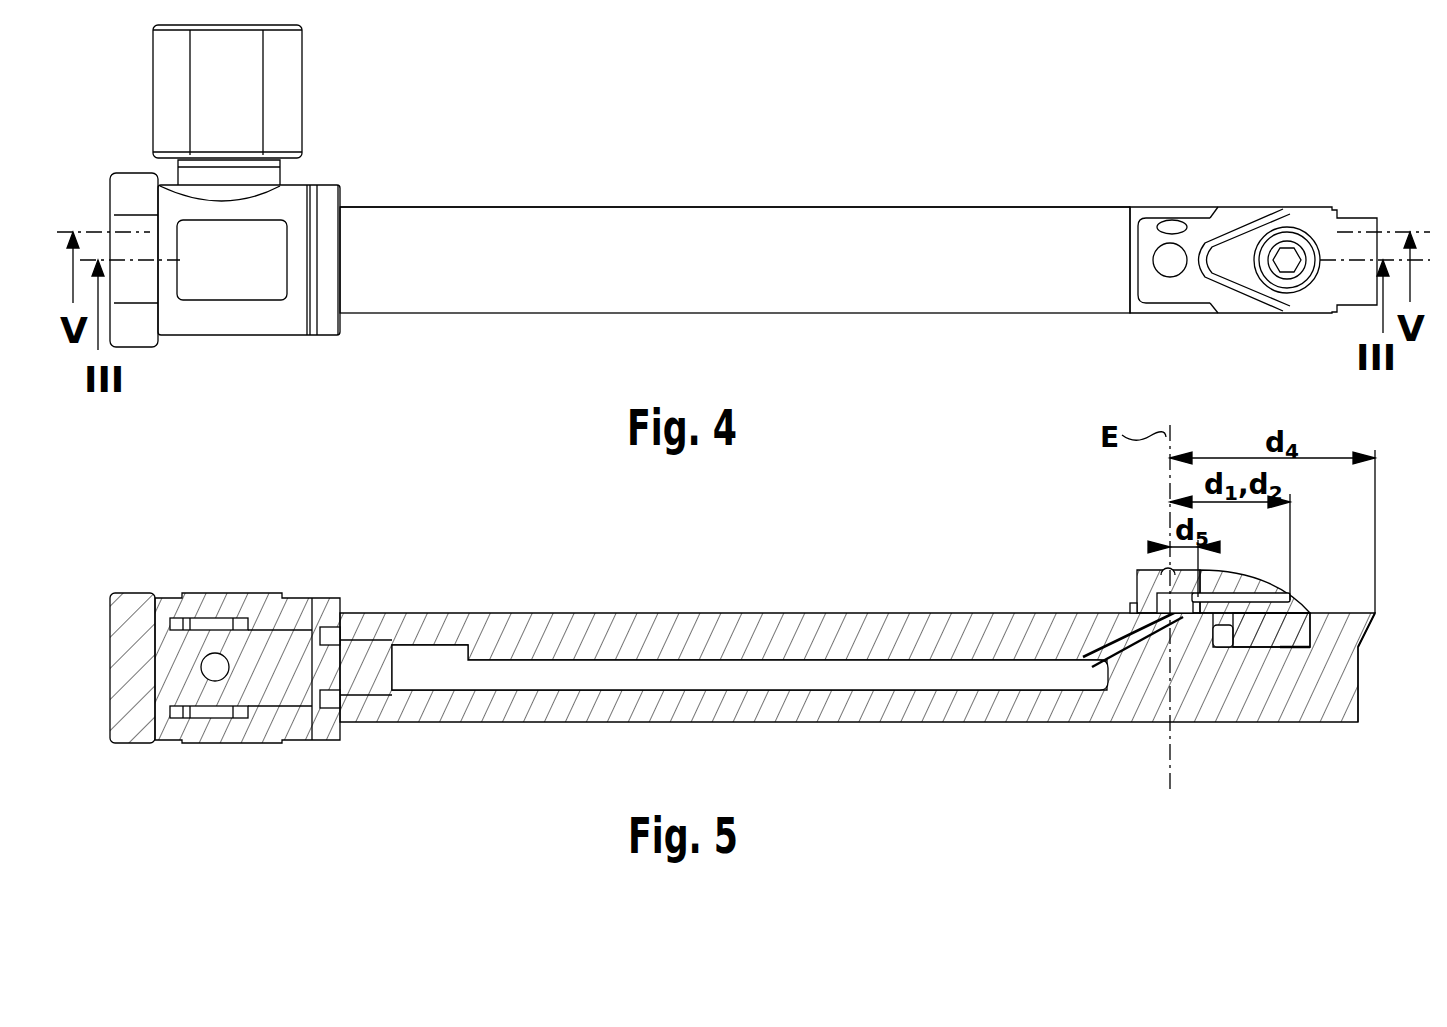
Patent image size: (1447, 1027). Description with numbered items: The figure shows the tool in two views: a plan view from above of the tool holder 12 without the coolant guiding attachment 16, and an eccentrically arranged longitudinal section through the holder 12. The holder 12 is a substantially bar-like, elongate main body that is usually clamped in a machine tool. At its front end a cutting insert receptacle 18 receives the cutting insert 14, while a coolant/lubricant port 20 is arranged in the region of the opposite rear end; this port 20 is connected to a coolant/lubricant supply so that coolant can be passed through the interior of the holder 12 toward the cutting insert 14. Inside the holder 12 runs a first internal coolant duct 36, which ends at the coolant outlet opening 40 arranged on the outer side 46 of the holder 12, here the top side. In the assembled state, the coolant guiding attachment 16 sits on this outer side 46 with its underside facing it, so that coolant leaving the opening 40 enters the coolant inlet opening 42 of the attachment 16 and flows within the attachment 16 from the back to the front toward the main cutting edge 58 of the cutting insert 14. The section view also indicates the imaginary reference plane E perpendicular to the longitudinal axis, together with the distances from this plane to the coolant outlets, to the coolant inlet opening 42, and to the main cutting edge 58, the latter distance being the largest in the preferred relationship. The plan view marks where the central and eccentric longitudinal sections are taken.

In FIG. 4, the tool holder 12 is at (531, 313).
In FIG. 5, the tool holder 12 is at (532, 705).
In FIG. 4, the cutting insert 14 is at (1320, 232).
In FIG. 5, the cutting insert 14 is at (1263, 632).
In FIG. 5, the coolant guiding attachment 16 is at (1152, 572).
In FIG. 5, the cutting insert receptacle 18 is at (1370, 650).
In FIG. 4, the coolant/lubricant port 20 is at (283, 70).
In FIG. 5, the first internal coolant duct 36 is at (843, 683).
In FIG. 4, the coolant outlet opening 40 is at (1172, 220).
In FIG. 5, the coolant inlet opening 42 is at (1183, 612).
In FIG. 4, the outer side 46 is at (1040, 230).
In FIG. 5, the main cutting edge 58 is at (1368, 613).